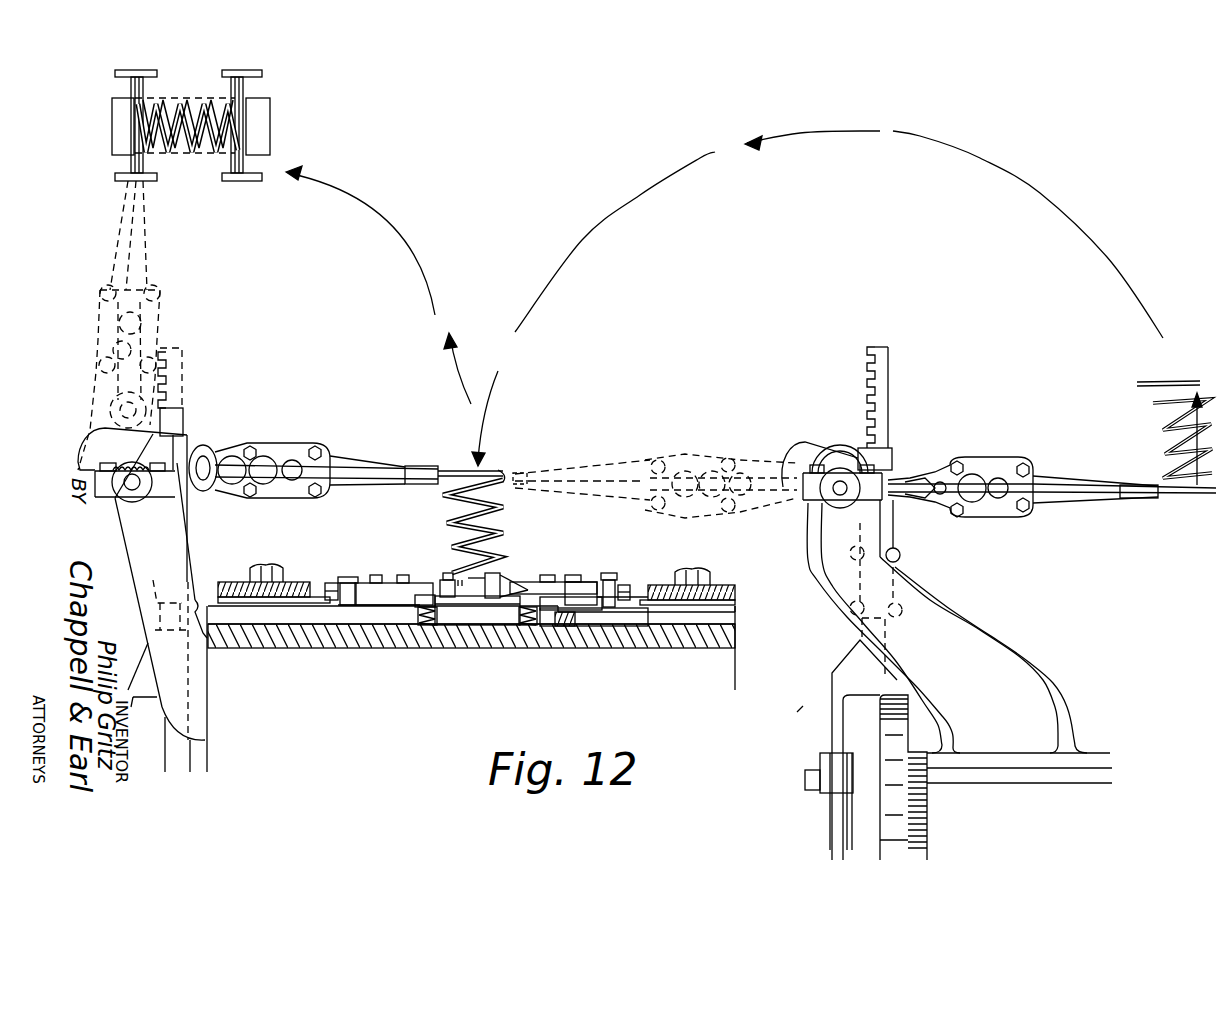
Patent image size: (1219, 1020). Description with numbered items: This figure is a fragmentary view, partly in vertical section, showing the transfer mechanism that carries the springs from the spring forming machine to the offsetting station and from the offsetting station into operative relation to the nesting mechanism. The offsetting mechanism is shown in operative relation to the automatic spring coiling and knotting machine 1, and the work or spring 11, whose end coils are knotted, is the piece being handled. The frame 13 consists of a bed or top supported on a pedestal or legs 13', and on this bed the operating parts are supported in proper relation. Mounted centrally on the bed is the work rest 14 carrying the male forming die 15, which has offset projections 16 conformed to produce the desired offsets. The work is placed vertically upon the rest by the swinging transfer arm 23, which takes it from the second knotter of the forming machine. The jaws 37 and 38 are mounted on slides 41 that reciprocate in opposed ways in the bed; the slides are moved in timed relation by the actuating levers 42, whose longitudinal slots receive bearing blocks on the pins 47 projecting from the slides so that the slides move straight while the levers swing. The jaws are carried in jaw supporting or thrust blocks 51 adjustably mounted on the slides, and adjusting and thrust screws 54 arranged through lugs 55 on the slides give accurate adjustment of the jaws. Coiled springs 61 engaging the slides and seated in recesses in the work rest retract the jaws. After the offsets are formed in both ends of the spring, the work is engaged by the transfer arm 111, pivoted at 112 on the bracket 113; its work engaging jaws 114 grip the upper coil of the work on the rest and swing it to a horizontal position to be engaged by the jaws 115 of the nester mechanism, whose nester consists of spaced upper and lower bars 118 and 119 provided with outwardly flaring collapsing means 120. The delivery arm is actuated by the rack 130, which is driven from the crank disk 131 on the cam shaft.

The automatic spring coiling and knotting machine 1 is at (1100, 784).
The work or spring 11 is at (190, 145).
The frame 13 is at (471, 689).
The pedestal or legs 13' is at (769, 659).
The work rest 14 is at (445, 580).
The male forming die 15 is at (502, 580).
The offset projections 16 is at (454, 598).
The swinging transfer arm 23 is at (982, 510).
The jaw 37 is at (567, 580).
The jaw 38 is at (420, 594).
The slides 41 is at (350, 605).
The actuating levers 42 is at (298, 580).
The pins 47 is at (268, 567).
The jaw supporting or thrust blocks 51 is at (366, 582).
The adjusting and thrust screws 54 is at (330, 600).
The lugs 55 is at (341, 576).
The coiled springs 61 is at (428, 626).
The transfer arm 111 is at (106, 338).
The pivot 112 is at (130, 485).
The bracket 113 is at (175, 558).
The work engaging jaws 114 is at (126, 195).
The jaws of the nester mechanism 115 is at (176, 97).
The upper bar 118 is at (255, 180).
The lower bar 119 is at (262, 74).
The outwardly flaring collapsing means 120 is at (268, 125).
The rack 130 is at (183, 424).
The crank disk 131 is at (860, 822).